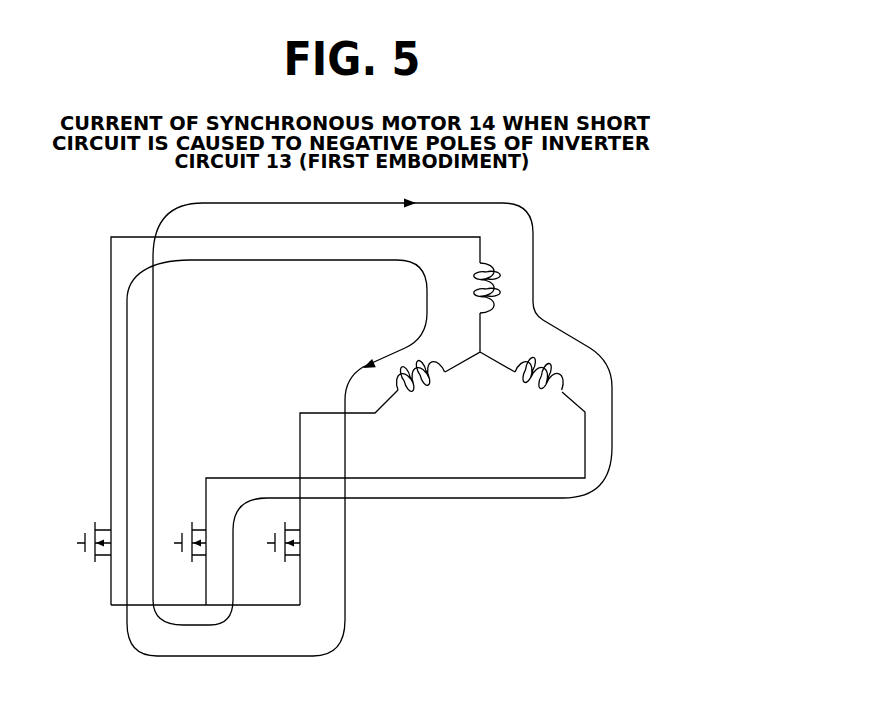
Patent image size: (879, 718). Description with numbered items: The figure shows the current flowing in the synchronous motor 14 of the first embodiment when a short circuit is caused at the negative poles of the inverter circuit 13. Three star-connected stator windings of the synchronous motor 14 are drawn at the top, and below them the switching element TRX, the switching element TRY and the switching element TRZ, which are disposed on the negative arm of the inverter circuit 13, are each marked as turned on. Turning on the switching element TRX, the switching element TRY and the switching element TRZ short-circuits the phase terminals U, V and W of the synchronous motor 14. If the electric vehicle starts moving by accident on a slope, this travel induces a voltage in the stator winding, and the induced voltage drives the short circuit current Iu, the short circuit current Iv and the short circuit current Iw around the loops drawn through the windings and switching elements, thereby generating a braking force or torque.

The inverter circuit 13 is at (200, 542).
The synchronous motor 14 is at (480, 329).
The switching element TRX is at (85, 542).
The switching element TRY is at (182, 542).
The switching element TRZ is at (291, 554).
The short circuit current Iu is at (460, 312).
The short circuit current Iv is at (566, 371).
The short circuit current Iw is at (435, 352).